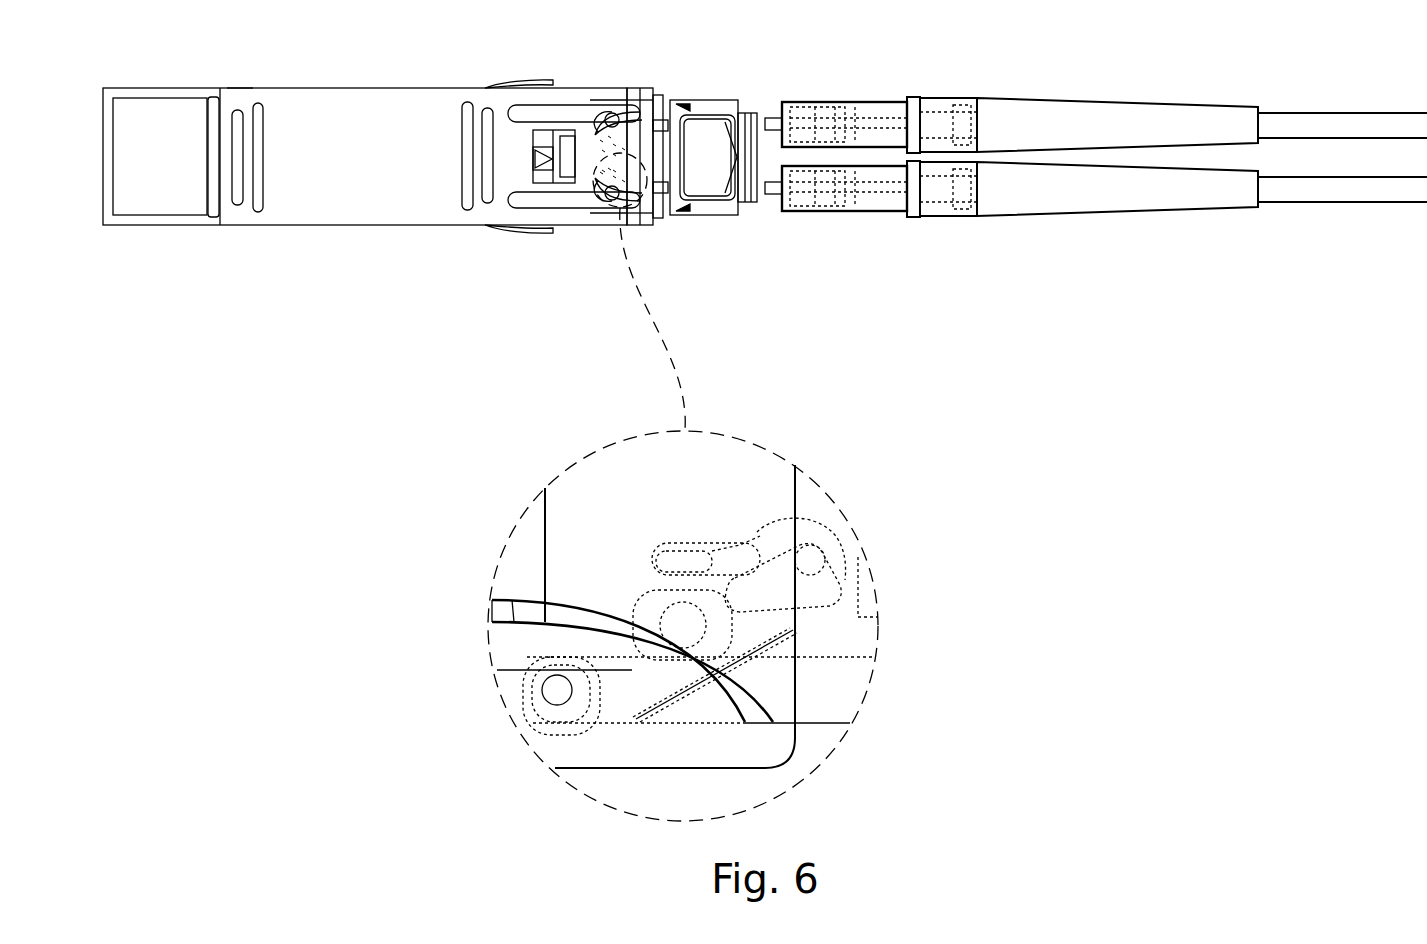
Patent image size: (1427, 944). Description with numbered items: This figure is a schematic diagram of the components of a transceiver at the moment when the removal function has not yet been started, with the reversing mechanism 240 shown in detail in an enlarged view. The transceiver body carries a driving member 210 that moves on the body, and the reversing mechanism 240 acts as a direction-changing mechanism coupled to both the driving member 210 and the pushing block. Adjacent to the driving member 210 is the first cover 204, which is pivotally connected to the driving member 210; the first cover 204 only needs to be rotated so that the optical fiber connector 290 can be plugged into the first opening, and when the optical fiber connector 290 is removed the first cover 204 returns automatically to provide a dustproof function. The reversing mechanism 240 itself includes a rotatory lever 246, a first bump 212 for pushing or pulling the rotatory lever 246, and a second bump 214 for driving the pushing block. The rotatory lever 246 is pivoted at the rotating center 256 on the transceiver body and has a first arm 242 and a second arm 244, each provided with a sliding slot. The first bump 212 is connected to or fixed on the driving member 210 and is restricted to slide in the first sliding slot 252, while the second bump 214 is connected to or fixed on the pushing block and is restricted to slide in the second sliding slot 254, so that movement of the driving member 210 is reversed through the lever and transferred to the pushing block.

The first cover 204 is at (742, 110).
The driving member 210 is at (653, 117).
The optical fiber connector 290 is at (907, 218).
The reversing mechanism 240 is at (707, 587).
The second arm 244 is at (757, 530).
The rotatory lever 246 is at (628, 572).
The second bump 214 is at (810, 560).
The first arm 242 is at (565, 635).
The second sliding slot 254 is at (760, 590).
The first bump 212 is at (557, 690).
The rotating center 256 is at (683, 625).
The first sliding slot 252 is at (590, 680).